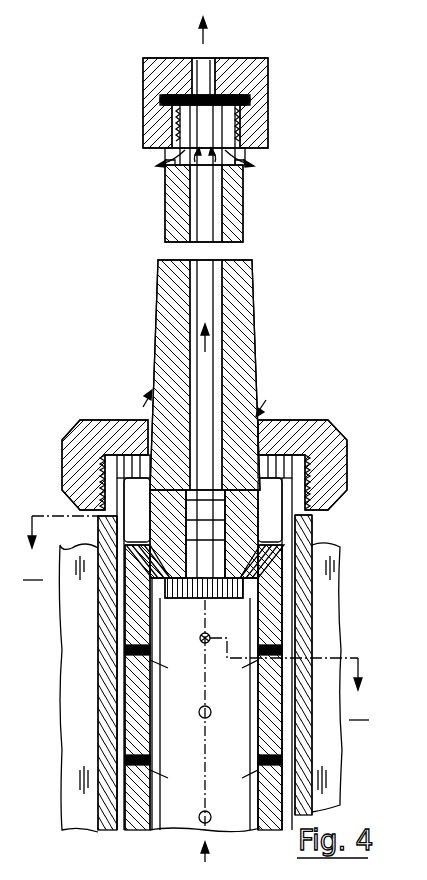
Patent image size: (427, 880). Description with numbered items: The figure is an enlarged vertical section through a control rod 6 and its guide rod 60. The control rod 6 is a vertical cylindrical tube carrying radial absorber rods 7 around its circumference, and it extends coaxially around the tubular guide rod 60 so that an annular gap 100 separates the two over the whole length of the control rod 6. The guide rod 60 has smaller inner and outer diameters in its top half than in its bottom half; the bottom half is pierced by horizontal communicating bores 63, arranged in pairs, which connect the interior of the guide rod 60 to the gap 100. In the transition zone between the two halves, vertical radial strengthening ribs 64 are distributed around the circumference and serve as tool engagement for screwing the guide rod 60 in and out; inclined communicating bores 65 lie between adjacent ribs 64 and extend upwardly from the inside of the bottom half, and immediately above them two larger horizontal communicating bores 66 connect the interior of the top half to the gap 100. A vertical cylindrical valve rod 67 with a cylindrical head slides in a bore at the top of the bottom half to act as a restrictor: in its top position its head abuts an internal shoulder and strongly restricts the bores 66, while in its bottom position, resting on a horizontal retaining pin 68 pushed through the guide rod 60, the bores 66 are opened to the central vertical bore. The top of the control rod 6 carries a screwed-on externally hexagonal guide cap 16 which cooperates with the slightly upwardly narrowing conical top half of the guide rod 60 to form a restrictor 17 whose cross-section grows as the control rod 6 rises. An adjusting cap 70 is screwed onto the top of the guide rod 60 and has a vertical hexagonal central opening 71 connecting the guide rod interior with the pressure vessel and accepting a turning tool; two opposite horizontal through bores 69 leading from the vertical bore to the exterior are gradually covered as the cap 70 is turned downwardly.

The control rod 6 is at (100, 740).
The absorber rod 7 is at (80, 778).
The guide cap 16 is at (313, 438).
The restrictor 17 is at (262, 406).
The guide rod 60 is at (230, 303).
The communicating bores 63 is at (120, 740).
The strengthening ribs 64 is at (170, 515).
The inclined communicating bores 65 is at (150, 563).
The communicating bores 66 is at (240, 507).
The valve rod 67 is at (200, 535).
The retaining pin 68 is at (200, 638).
The through bores 69 is at (243, 148).
The adjusting cap 70 is at (253, 108).
The central opening 71 is at (213, 66).
The annular gap 100 is at (118, 828).